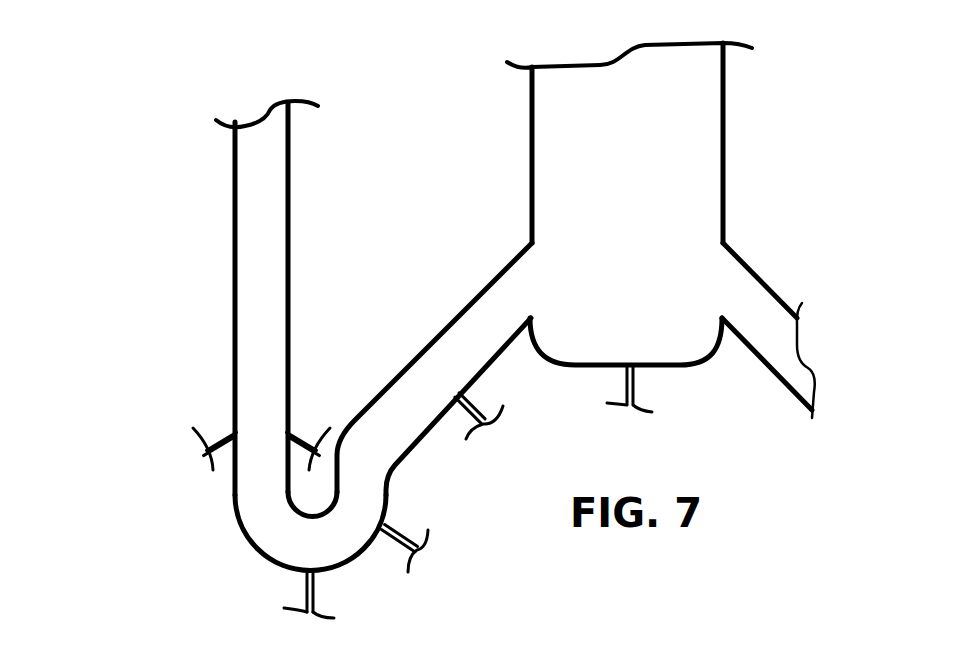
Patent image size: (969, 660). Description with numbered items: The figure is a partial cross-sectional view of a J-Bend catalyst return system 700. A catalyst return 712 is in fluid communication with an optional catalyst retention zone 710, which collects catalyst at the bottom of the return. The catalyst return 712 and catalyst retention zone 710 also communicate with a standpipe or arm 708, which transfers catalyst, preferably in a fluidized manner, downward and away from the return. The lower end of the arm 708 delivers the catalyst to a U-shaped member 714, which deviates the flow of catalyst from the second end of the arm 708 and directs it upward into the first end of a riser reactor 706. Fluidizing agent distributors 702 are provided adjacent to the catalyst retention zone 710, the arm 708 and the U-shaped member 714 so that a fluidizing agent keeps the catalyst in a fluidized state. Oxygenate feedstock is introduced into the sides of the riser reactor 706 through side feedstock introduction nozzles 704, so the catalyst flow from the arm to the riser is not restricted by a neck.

The J-Bend catalyst return system 700 is at (152, 505).
The fluidizing agent distributor 702 is at (478, 406).
The side feedstock introduction nozzle 704 is at (228, 432).
The riser reactor 706 is at (233, 209).
The standpipe or arm 708 is at (475, 300).
The catalyst retention zone 710 is at (626, 341).
The catalyst return 712 is at (725, 136).
The U-shaped member 714 is at (340, 569).